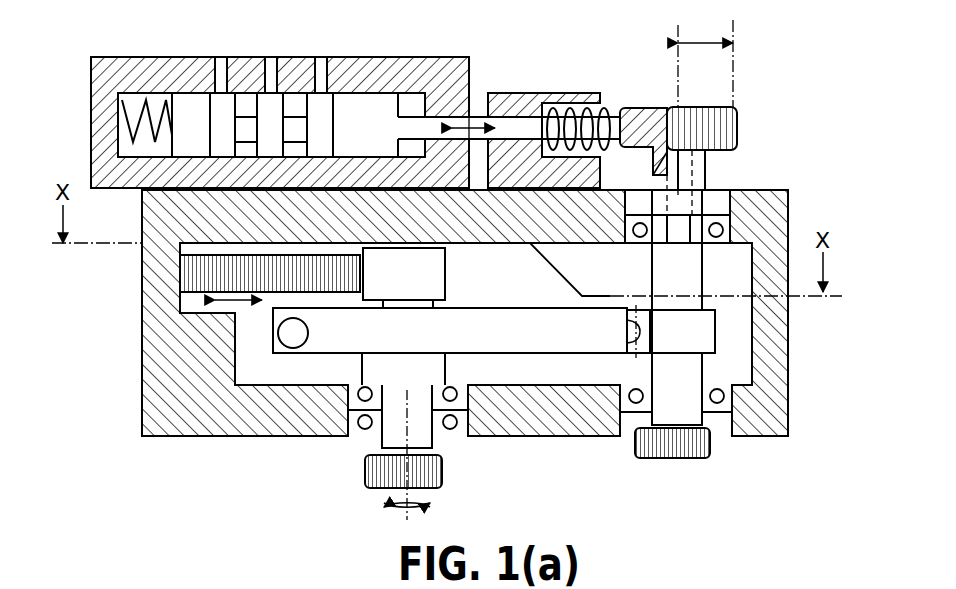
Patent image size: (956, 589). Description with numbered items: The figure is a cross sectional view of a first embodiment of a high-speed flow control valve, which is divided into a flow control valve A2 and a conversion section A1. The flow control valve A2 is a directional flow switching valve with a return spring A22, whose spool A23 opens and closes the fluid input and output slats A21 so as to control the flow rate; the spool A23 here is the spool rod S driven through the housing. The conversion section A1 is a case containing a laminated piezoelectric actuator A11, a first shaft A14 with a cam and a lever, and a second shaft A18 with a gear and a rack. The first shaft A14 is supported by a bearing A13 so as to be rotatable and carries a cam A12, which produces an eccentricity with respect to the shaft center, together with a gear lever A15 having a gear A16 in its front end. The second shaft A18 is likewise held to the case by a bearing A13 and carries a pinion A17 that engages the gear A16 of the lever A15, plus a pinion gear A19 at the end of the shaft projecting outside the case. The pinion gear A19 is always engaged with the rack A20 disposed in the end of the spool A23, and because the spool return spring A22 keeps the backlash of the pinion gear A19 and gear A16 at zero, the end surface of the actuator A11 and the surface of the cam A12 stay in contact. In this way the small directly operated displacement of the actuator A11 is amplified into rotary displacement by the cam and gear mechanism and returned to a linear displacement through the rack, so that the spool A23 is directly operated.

The conversion section A1 is at (183, 437).
The flow control valve A2 is at (403, 57).
The laminated piezoelectric actuator A11 is at (186, 275).
The cam A12 is at (440, 254).
The bearing A13 is at (355, 438).
The first shaft A14 is at (440, 440).
The gear lever A15 is at (520, 322).
The gear A16 is at (640, 338).
The pinion A17 is at (713, 355).
The second shaft A18 is at (688, 190).
The pinion gear A19 is at (717, 108).
The rack A20 is at (746, 0).
The fluid input and output slats A21 is at (321, 58).
The return spring A22 is at (148, 110).
The spool A23 is at (523, 128).
The spool rod S is at (480, 128).